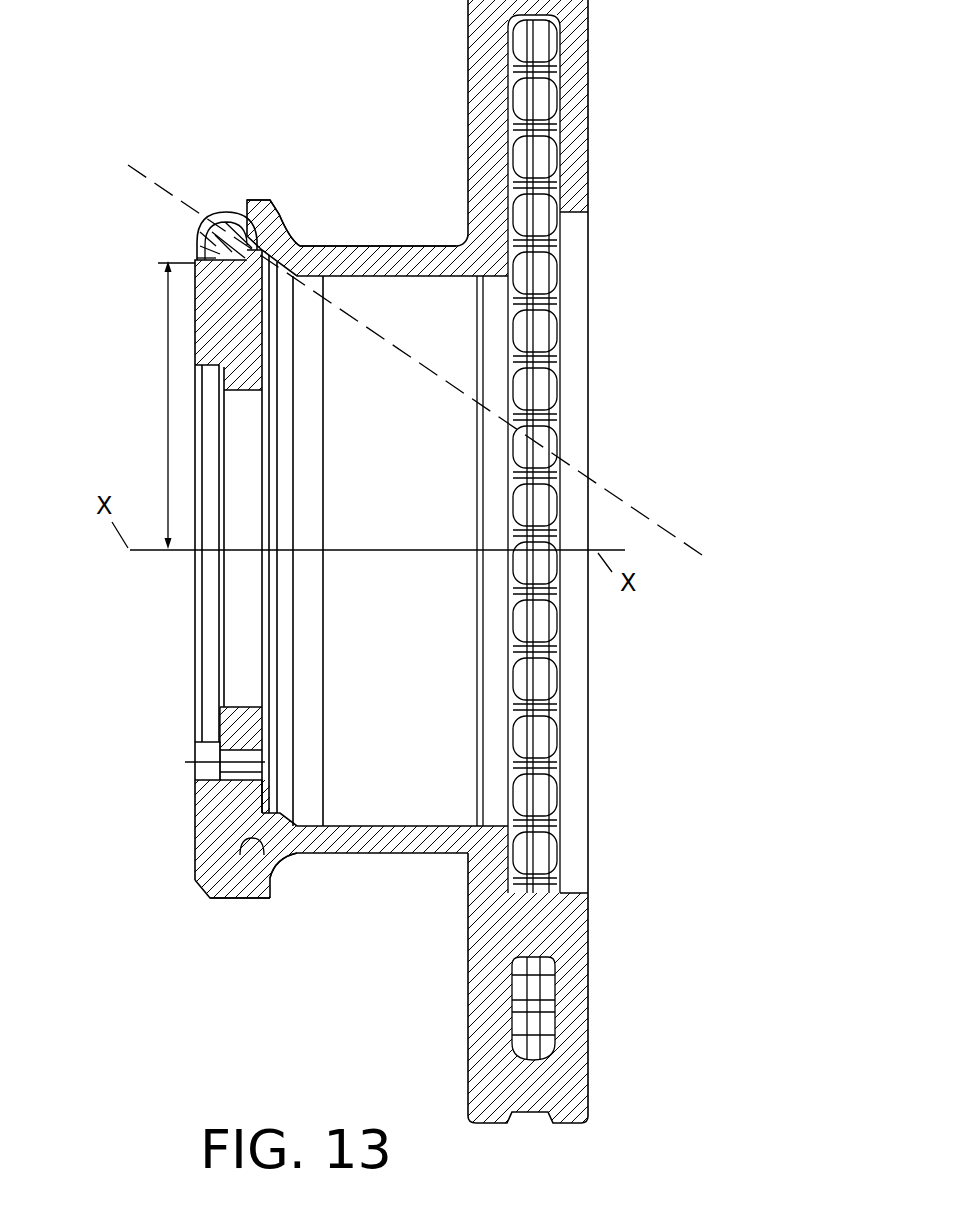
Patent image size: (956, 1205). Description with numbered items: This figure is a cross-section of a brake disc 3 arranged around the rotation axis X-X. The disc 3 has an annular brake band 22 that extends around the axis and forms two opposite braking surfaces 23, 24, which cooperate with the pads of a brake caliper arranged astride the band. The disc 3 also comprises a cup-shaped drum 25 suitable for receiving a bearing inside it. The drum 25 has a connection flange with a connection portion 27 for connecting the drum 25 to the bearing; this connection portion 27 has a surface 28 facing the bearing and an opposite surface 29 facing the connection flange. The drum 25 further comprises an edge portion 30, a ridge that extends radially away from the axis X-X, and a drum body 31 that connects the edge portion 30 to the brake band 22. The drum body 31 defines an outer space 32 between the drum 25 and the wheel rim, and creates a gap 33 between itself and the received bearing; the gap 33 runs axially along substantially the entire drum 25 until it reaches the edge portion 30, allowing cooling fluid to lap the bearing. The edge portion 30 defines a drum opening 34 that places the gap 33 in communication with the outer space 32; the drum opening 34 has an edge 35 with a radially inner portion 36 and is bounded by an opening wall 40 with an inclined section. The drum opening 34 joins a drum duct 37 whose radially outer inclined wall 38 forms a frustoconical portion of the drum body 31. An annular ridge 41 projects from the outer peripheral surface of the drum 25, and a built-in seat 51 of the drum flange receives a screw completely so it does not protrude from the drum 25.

The disc 3 is at (350, 88).
The brake band 22 is at (578, 90).
The braking surface 23 is at (588, 160).
The braking surface 24 is at (468, 45).
The drum 25 is at (350, 847).
The connection portion 27 is at (260, 722).
The surface 28 is at (262, 343).
The opposite surface 29 is at (195, 317).
The edge portion 30 is at (230, 898).
The drum body 31 is at (245, 225).
The outer space 32 is at (352, 180).
The gap 33 is at (435, 293).
The drum opening 34 is at (205, 195).
The edge of drum opening 35 is at (200, 228).
The radially inner portion 36 is at (200, 240).
The drum duct 37 is at (313, 247).
The inclined wall 38 is at (262, 215).
The opening wall 40 is at (192, 260).
The annular ridge 41 is at (250, 880).
The built-in seat 51 is at (197, 762).